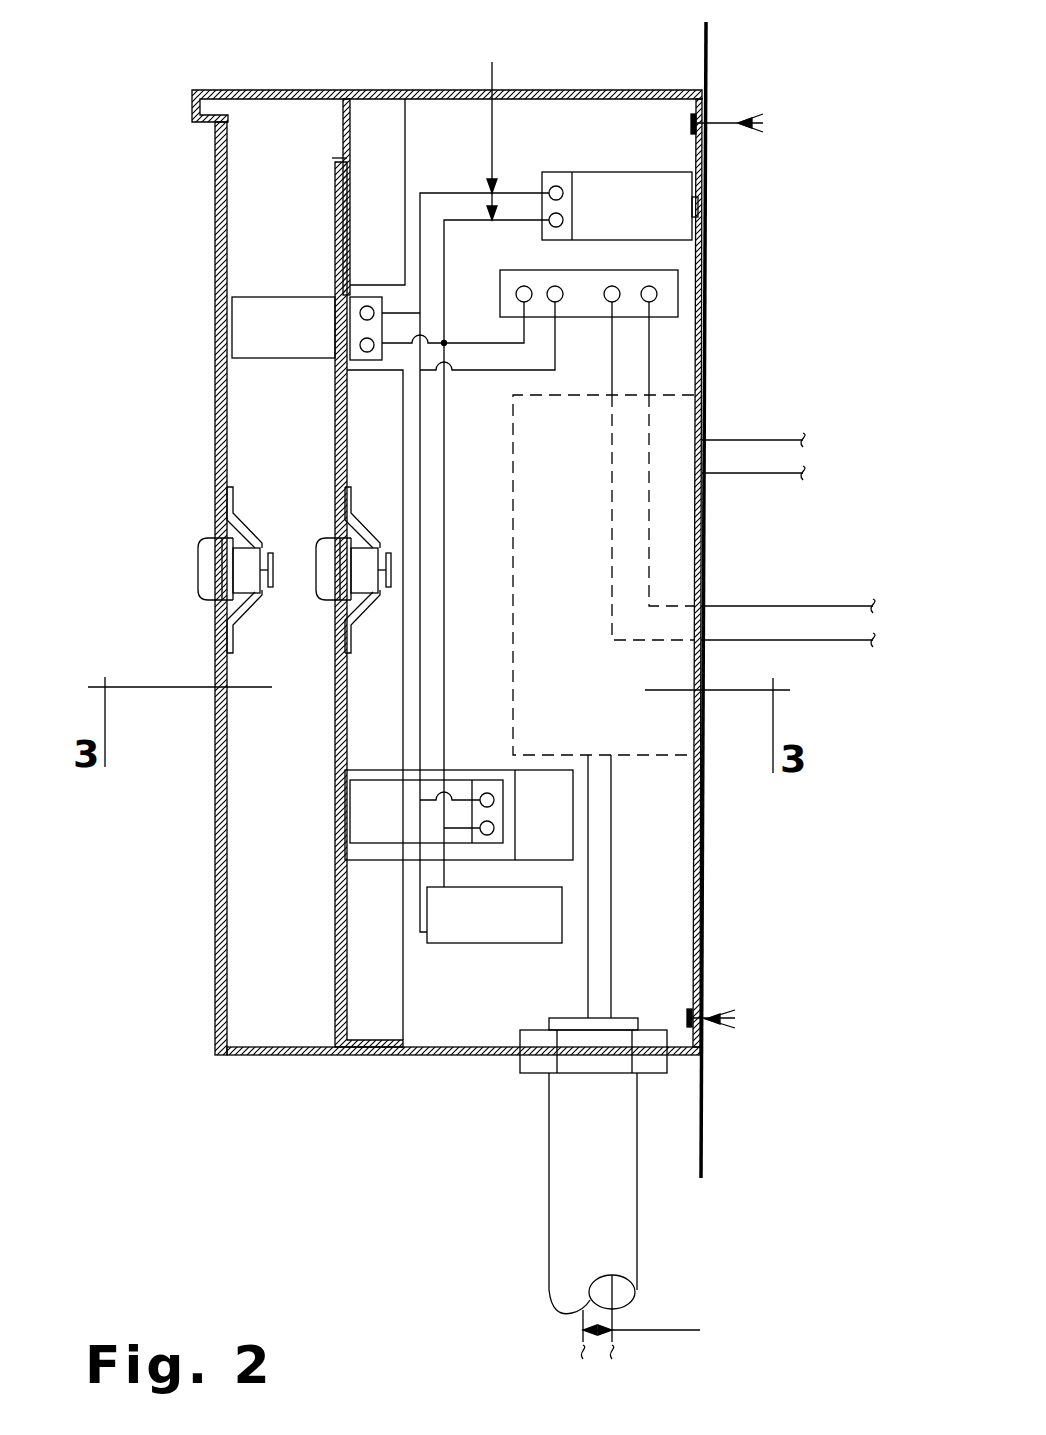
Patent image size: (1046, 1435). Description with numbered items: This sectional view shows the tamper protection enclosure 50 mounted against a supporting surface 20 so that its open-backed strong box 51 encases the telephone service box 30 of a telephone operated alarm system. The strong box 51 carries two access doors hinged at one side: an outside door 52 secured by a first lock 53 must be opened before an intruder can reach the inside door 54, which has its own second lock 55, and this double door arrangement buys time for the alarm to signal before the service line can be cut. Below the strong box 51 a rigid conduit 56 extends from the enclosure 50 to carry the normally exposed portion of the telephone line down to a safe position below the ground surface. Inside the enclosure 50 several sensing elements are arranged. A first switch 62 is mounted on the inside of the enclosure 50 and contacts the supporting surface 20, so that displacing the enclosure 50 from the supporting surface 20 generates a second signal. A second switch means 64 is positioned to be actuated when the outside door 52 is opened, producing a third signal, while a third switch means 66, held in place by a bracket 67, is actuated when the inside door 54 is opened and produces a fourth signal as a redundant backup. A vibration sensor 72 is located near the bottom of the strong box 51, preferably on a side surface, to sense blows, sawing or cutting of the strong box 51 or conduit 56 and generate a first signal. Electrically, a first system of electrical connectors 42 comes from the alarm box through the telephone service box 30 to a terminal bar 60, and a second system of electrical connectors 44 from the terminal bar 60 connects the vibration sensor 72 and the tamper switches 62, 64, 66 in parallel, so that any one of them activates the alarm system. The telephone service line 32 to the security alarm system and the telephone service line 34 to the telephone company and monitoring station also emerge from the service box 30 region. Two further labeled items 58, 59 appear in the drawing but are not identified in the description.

The supporting surface 20 is at (701, 1113).
The telephone service box 30 is at (676, 388).
The telephone service line 32 is at (757, 440).
The telephone service line 34 is at (663, 1331).
The first system of electrical connectors 42 is at (610, 360).
The second system of electrical connectors 44 is at (492, 127).
The enclosure 50 is at (160, 74).
The strong box 51 is at (333, 93).
The outside door 52 is at (215, 268).
The first lock 53 is at (250, 562).
The inside door 54 is at (335, 422).
The second lock 55 is at (367, 570).
The conduit 56 is at (548, 1155).
The upper clamp 58 is at (707, 108).
The lower clamp 59 is at (717, 1017).
The terminal bar 60 is at (678, 290).
The first switch 62 is at (660, 173).
The second switch means 64 is at (305, 295).
The third switch means 66 is at (392, 845).
The bracket 67 is at (573, 813).
The vibration sensor 72 is at (503, 943).